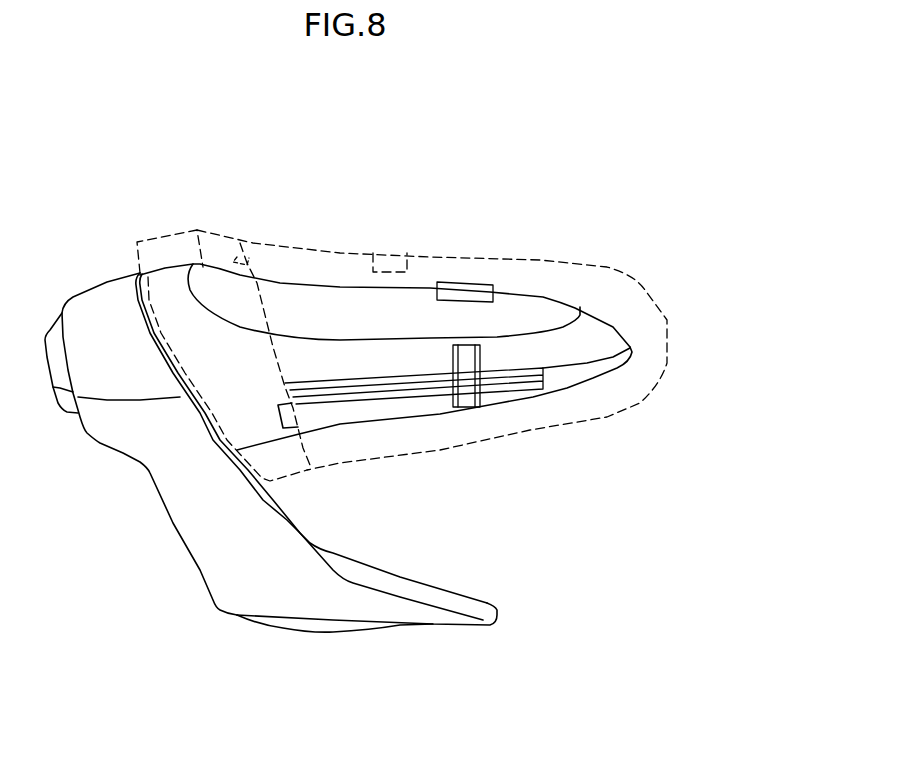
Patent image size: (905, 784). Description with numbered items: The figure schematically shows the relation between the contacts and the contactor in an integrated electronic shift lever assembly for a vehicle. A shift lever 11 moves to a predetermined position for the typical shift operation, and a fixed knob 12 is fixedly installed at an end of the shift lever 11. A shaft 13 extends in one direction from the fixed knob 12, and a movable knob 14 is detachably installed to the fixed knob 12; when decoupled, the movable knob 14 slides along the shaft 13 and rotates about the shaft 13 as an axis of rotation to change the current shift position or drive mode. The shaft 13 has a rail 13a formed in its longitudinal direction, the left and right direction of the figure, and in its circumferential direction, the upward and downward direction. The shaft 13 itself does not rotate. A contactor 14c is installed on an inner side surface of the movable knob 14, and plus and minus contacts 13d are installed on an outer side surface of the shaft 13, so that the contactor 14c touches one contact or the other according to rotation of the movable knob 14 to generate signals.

The shift lever 11 is at (217, 535).
The fixed knob 12 is at (168, 235).
The shaft 13 is at (318, 283).
The rail 13a is at (410, 388).
The (+) and (−) contacts 13d is at (465, 292).
The movable knob 14 is at (523, 258).
The contactor 14c is at (390, 255).